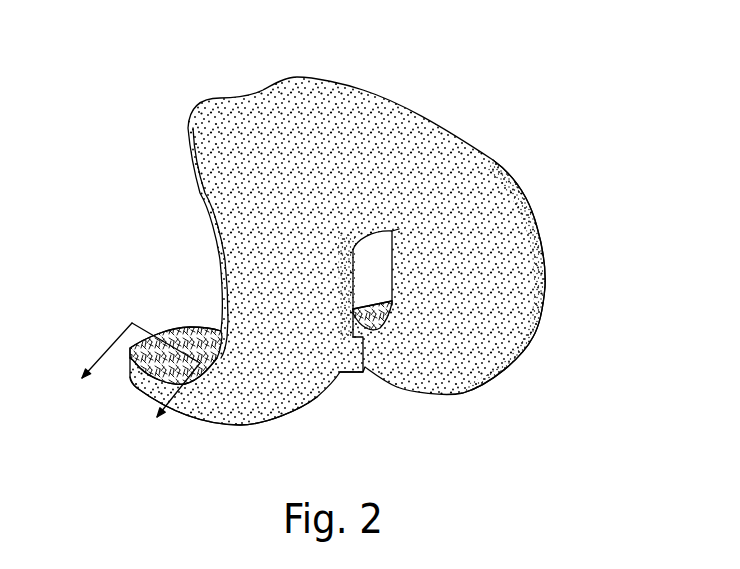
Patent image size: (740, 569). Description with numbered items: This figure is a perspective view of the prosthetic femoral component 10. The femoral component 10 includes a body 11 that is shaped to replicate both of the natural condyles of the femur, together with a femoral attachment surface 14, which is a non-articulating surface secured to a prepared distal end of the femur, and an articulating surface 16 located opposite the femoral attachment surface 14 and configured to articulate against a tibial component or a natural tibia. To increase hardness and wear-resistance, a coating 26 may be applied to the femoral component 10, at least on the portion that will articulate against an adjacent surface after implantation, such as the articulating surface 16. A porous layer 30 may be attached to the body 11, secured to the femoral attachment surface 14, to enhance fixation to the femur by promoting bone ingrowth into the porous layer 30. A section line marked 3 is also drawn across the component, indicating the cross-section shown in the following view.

The femoral component 10 is at (565, 109).
The body 11 is at (356, 172).
The femoral attachment surface 14 is at (187, 328).
The articulating surface 16 is at (490, 262).
The coating 26 is at (545, 287).
The porous layer 30 is at (153, 358).
The section line 3- 3 is at (134, 384).